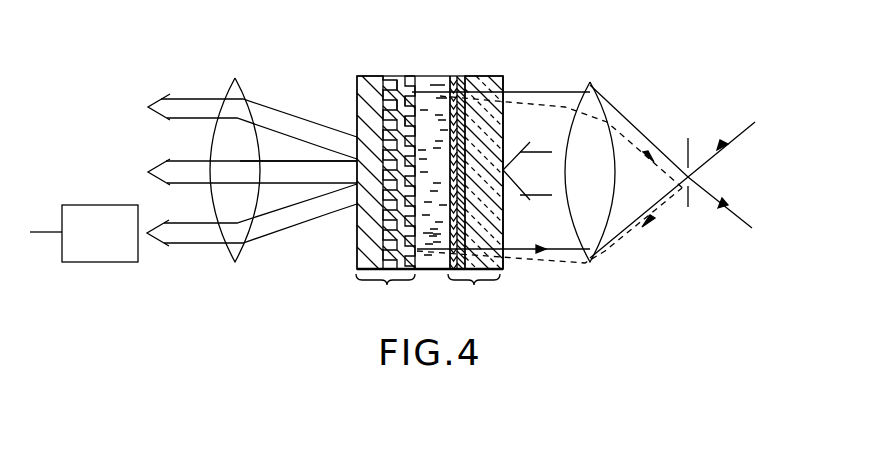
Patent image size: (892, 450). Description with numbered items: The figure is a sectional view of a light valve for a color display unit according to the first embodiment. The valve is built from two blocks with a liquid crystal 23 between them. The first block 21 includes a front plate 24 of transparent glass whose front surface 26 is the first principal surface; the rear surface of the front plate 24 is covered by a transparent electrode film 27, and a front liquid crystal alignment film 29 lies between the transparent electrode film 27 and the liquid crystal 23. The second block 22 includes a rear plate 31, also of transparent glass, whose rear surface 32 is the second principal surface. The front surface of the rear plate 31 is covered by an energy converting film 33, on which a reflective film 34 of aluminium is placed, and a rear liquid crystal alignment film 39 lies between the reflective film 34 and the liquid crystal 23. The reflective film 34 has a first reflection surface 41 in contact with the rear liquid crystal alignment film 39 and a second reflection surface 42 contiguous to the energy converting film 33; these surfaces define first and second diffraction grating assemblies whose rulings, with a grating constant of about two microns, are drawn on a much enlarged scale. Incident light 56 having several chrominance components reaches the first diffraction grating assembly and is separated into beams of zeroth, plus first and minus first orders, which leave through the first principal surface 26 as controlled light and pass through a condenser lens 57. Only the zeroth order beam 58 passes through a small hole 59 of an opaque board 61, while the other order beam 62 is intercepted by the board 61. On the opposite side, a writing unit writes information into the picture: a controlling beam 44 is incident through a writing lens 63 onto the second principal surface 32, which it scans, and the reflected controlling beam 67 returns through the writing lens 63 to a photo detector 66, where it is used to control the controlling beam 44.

The first block 21 is at (474, 291).
The second block 22 is at (385, 291).
The liquid crystal 23 is at (437, 265).
The front plate 24 is at (493, 76).
The front surface 26 is at (503, 120).
The transparent electrode film 27 is at (463, 76).
The front liquid crystal alignment film 29 is at (455, 76).
The rear plate 31 is at (362, 76).
The rear surface 32 is at (357, 100).
The energy converting film 33 is at (390, 76).
The reflective film 34 is at (399, 76).
The rear liquid crystal alignment film 39 is at (413, 76).
The first reflection surface 41 is at (425, 92).
The second reflection surface 42 is at (391, 77).
The controlling beam 44 is at (288, 175).
The incident light 56 is at (538, 195).
The condenser lens 57 is at (592, 82).
The zeroth order beam 58 is at (737, 130).
The small hole 59 is at (690, 140).
The opaque board 61 is at (690, 205).
The other order beam 62 is at (636, 230).
The writing lens 63 is at (232, 78).
The photo detector 66 is at (100, 205).
The reflected controlling beam 67 is at (195, 240).